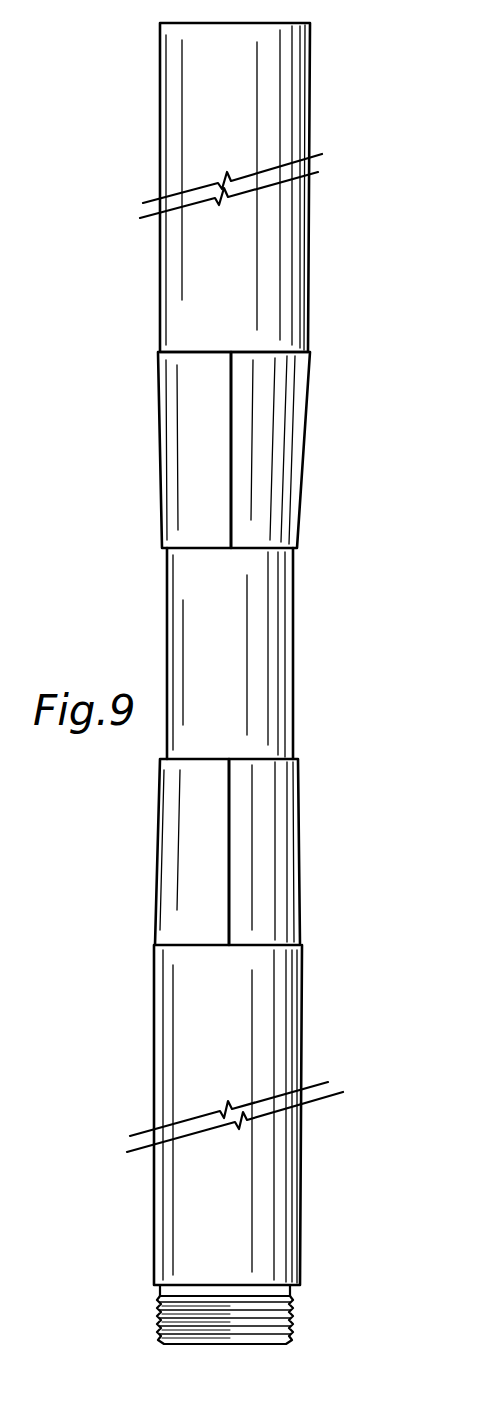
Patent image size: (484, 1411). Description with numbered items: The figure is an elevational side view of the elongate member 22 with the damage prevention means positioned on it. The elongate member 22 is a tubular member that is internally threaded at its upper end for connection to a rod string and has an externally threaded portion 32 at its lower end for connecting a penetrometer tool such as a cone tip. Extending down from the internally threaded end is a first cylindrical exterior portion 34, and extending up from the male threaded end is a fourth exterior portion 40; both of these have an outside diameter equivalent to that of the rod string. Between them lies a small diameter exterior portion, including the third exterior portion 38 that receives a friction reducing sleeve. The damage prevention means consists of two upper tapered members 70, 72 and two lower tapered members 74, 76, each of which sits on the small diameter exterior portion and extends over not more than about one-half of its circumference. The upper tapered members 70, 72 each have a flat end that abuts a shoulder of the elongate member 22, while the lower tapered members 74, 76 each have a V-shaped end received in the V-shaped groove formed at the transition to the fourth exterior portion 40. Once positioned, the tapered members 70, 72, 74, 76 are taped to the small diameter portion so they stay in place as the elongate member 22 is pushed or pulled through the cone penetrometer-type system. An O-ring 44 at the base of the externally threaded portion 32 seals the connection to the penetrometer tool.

The elongate member 22 is at (292, 115).
The first cylindrical exterior portion 34 is at (290, 280).
The upper tapered member 70 is at (190, 437).
The upper tapered member 72 is at (277, 472).
The third exterior portion 38 is at (278, 663).
The lower tapered member 74 is at (178, 861).
The lower tapered member 76 is at (278, 870).
The fourth exterior portion 40 is at (180, 1058).
The O-ring 44 is at (290, 1300).
The externally threaded portion 32 is at (165, 1310).